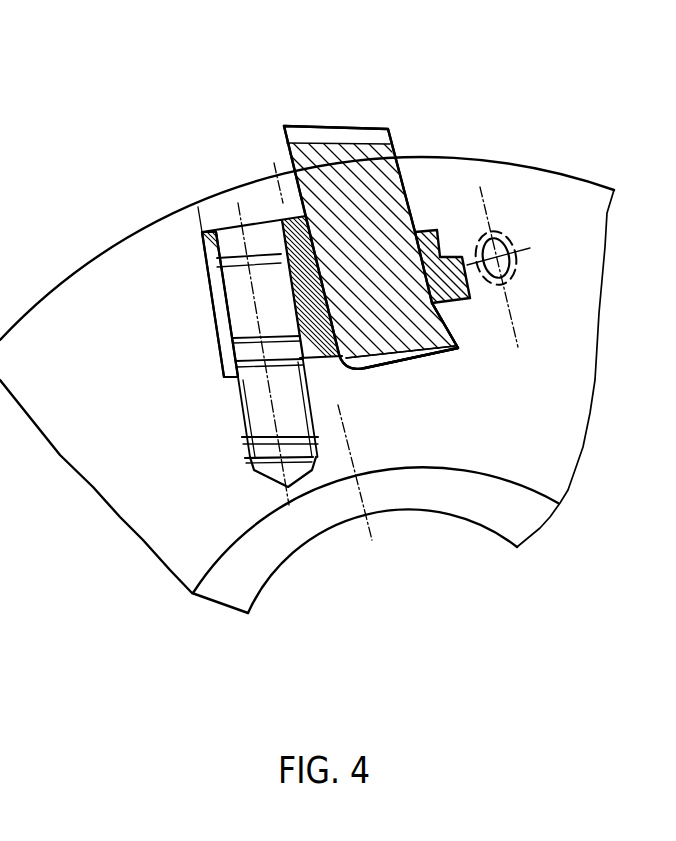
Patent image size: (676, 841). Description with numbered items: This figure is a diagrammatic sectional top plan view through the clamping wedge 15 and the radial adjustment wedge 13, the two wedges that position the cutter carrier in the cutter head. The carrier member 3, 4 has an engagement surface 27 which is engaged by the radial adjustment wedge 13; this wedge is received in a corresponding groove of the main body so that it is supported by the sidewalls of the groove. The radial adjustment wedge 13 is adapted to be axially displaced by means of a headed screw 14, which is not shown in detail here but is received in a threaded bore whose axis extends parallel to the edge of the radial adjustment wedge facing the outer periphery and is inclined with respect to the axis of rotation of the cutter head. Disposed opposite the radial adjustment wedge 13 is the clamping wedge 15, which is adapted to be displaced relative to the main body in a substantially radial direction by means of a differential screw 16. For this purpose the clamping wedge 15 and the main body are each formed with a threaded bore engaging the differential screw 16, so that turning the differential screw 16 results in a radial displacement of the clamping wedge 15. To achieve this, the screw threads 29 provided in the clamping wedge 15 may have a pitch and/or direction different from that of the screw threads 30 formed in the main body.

The carrier member 3 is at (358, 180).
The carrier member 4 is at (376, 190).
The radial adjustment wedge 13 is at (433, 231).
The headed screw 14 is at (507, 264).
The clamping wedge 15 is at (283, 212).
The differential screw 16 is at (265, 397).
The engagement surface 27 is at (460, 338).
The screw threads 29 is at (207, 258).
The screw threads 30 is at (238, 400).